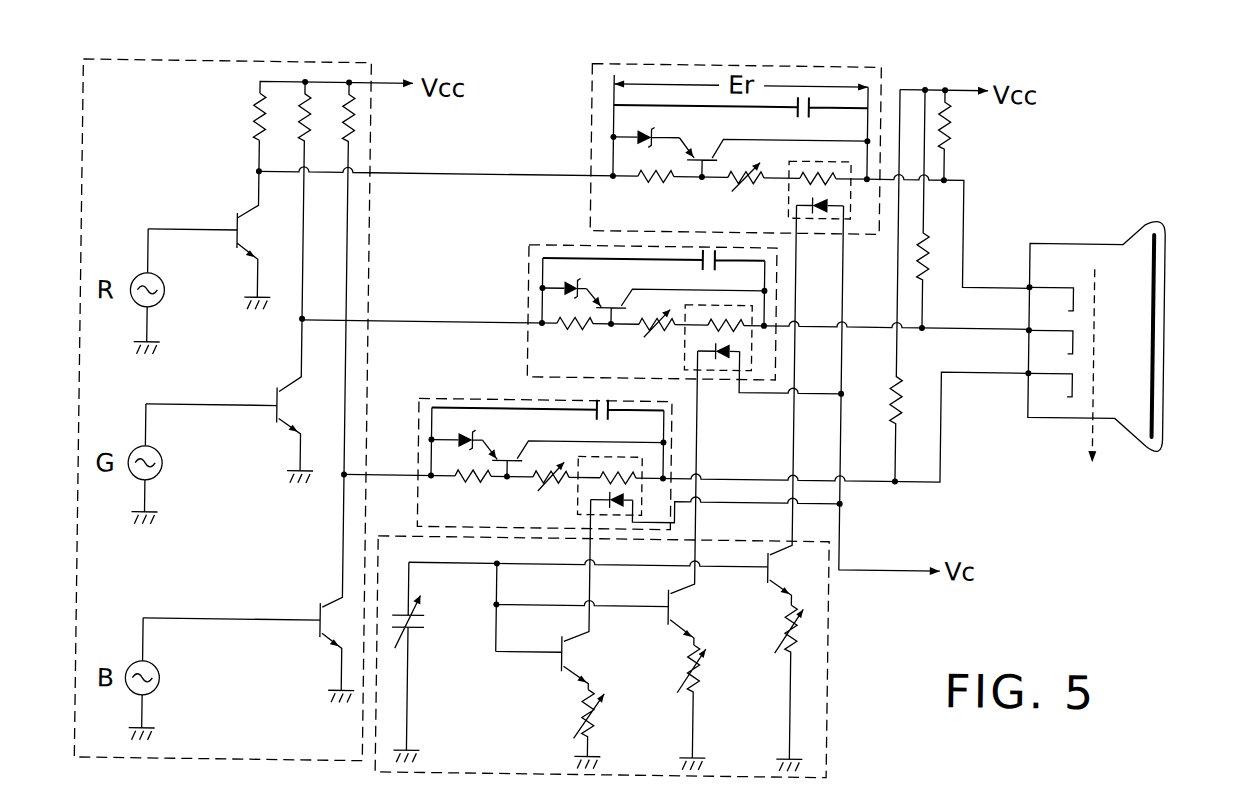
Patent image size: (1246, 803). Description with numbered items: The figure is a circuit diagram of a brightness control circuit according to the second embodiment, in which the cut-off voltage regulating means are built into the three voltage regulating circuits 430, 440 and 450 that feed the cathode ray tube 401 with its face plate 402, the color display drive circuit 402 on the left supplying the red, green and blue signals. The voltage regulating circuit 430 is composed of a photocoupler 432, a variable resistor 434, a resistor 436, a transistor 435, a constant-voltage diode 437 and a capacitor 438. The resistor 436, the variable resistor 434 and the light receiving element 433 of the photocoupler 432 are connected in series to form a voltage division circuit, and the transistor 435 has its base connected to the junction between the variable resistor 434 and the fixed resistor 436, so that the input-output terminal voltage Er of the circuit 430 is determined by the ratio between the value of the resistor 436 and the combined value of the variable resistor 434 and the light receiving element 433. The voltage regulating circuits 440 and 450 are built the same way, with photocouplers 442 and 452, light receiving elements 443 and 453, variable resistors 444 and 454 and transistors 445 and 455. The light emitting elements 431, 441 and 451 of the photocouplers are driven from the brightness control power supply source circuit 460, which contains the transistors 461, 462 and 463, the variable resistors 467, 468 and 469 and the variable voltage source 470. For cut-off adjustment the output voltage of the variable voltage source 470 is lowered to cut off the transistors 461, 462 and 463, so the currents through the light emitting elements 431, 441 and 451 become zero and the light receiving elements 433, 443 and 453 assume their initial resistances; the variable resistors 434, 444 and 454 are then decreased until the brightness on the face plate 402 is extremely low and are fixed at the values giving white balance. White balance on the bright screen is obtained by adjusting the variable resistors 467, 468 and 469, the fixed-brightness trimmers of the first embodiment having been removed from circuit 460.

The cathode ray tube 401 is at (1063, 238).
The face plate 402 is at (371, 65).
The voltage regulating circuit 430 is at (881, 76).
The light emitting element 431 is at (828, 215).
The photocoupler 432 is at (788, 193).
The light receiving element 433 is at (835, 158).
The variable resistor 434 is at (723, 182).
The transistor 435 is at (708, 147).
The resistor 436 is at (630, 182).
The constant-voltage diode 437 is at (624, 131).
The capacitor 438 is at (821, 101).
The voltage regulating circuit 440 is at (527, 279).
The light emitting element 441 is at (726, 356).
The photocoupler 442 is at (681, 339).
The light receiving element 443 is at (724, 302).
The variable resistor 444 is at (634, 335).
The transistor 445 is at (618, 300).
The voltage regulating circuit 450 is at (465, 399).
The light emitting element 451 is at (619, 512).
The photocoupler 452 is at (576, 491).
The light receiving element 453 is at (621, 458).
The variable resistor 454 is at (526, 491).
The transistor 455 is at (516, 449).
The brightness control power supply source circuit 460 is at (835, 649).
The transistor 461 is at (773, 587).
The transistor 462 is at (673, 627).
The transistor 463 is at (562, 670).
The variable resistor 467 is at (784, 654).
The variable resistor 468 is at (684, 688).
The variable resistor 469 is at (574, 718).
The variable voltage source 470 is at (430, 624).